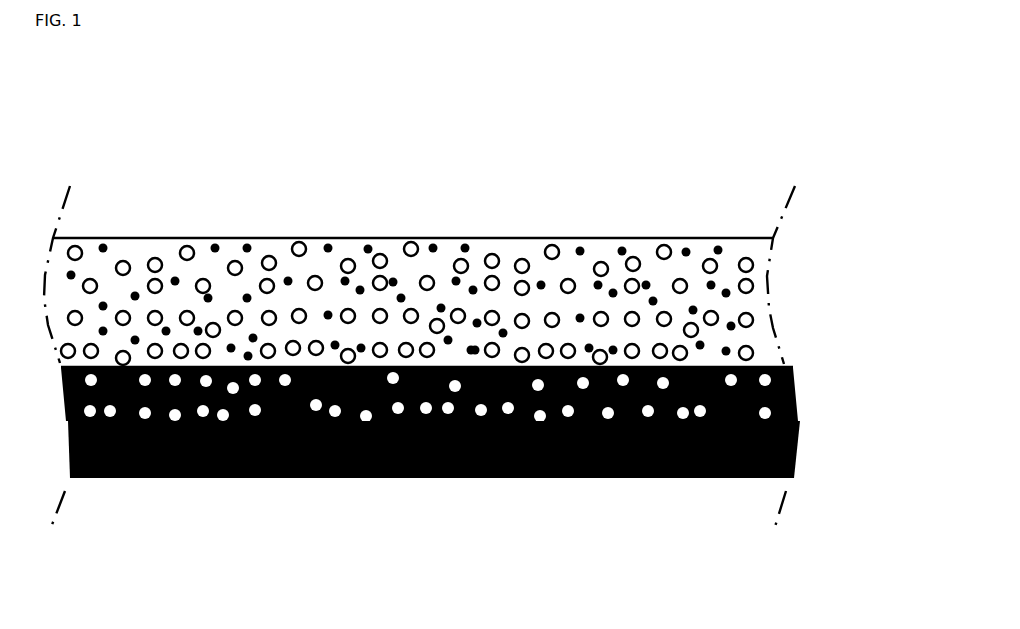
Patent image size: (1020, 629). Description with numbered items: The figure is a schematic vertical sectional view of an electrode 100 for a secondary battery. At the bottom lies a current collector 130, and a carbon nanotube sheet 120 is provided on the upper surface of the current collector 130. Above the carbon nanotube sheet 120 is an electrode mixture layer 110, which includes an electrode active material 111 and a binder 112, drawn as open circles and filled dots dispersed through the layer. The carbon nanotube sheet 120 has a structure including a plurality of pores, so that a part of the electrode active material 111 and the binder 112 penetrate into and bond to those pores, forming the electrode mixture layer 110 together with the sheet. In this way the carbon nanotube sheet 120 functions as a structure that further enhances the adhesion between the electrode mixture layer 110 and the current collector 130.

The electrode for a secondary battery 100 is at (145, 123).
The electrode mixture layer 110 is at (820, 268).
The electrode active material 111 is at (176, 238).
The binder 112 is at (319, 236).
The carbon nanotube sheet 120 is at (820, 377).
The current collector 130 is at (820, 432).